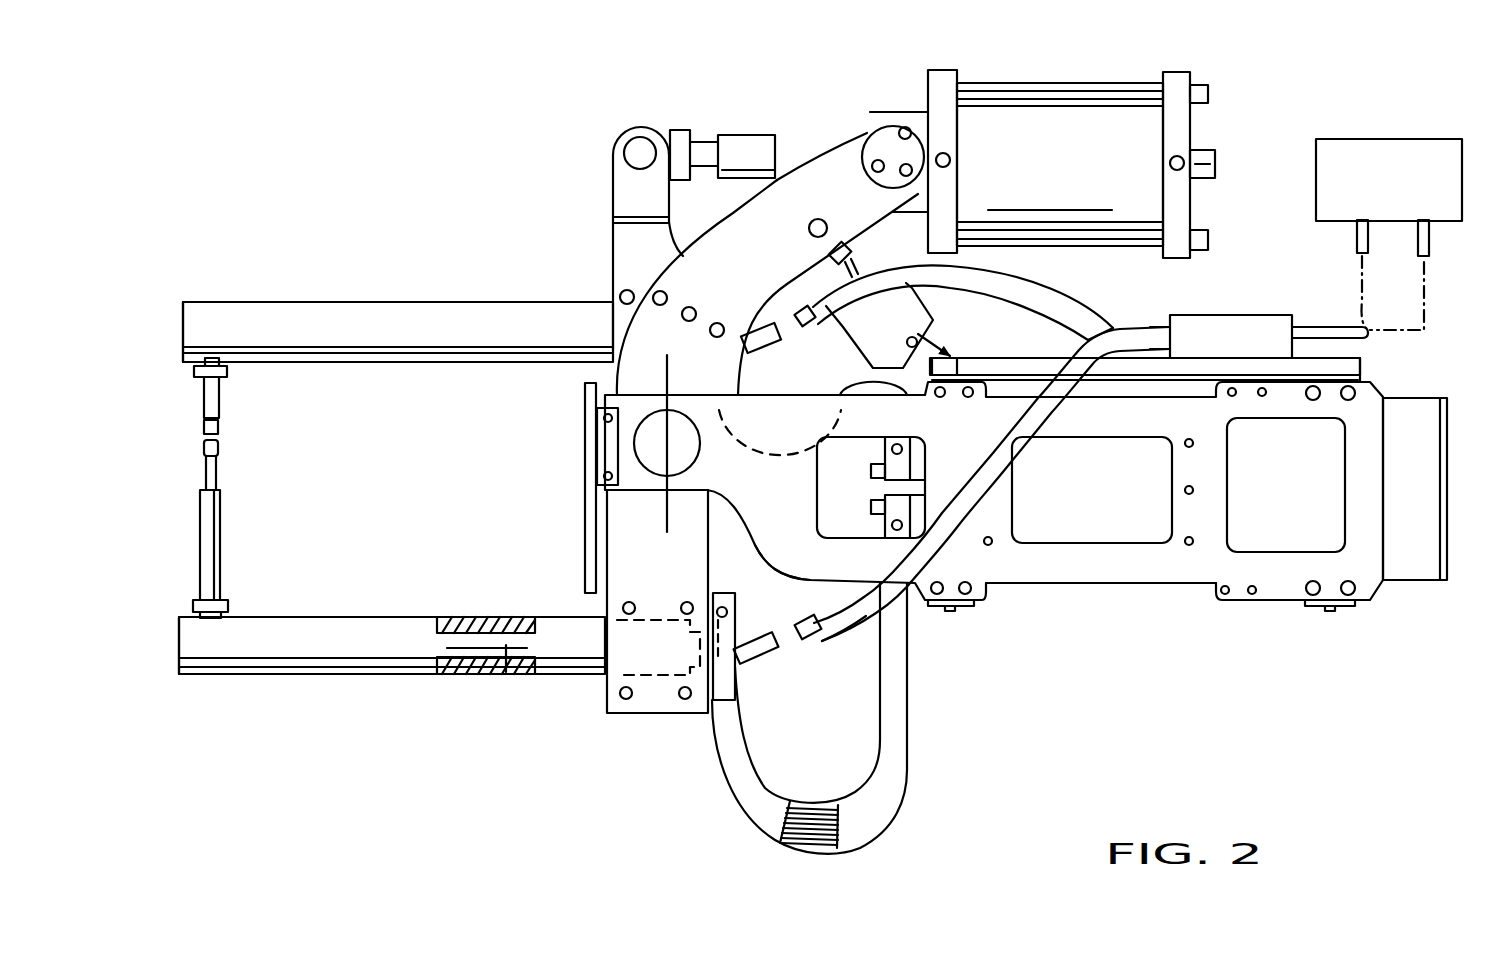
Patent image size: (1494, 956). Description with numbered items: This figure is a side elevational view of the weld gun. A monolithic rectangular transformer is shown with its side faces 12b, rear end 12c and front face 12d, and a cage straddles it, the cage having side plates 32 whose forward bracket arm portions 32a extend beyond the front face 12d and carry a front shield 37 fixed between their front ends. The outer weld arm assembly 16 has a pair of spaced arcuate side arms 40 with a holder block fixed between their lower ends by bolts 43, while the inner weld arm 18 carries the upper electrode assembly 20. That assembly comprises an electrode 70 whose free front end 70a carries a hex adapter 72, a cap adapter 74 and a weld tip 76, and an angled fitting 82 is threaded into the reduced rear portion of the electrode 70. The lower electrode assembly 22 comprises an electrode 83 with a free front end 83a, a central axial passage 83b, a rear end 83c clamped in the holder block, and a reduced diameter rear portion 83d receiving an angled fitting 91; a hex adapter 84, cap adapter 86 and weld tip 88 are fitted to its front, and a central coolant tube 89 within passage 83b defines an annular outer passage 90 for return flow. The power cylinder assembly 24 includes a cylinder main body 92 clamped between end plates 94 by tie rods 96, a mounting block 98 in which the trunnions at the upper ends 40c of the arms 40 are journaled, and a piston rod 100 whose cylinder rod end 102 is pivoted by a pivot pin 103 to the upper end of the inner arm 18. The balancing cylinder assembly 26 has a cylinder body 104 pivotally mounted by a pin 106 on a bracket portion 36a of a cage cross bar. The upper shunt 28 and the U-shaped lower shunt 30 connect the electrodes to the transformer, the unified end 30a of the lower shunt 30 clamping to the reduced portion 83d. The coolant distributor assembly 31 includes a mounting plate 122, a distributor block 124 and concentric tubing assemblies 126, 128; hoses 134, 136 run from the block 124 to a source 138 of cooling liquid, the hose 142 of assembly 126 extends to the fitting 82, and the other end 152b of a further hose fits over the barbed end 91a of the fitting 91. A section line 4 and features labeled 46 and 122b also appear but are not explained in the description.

The section line 4- 4 is at (682, 366).
The side faces 12b is at (1130, 527).
The rear end 12c is at (1452, 583).
The front face 12d is at (922, 480).
The outer weld arm assembly 16 is at (731, 211).
The inner weld arm 18 is at (612, 190).
The upper electrode assembly 20 is at (292, 268).
The lower electrode assembly 22 is at (404, 678).
The power cylinder assembly 24 is at (1262, 128).
The balancing cylinder assembly 26 is at (843, 338).
The upper shunt 28 is at (850, 396).
The lower shunt 30 is at (905, 800).
The unified end 30a is at (722, 592).
The coolant distributor assembly 31 is at (1232, 302).
The side plates 32 is at (1188, 582).
The forward bracket arm portions 32a is at (768, 572).
The bracket portion 36a is at (948, 348).
The front shield 37 is at (584, 503).
The arcuate side arms 40 is at (672, 262).
The upper ends 40c is at (864, 138).
The bolts 43 is at (618, 712).
The pivot 46 is at (680, 458).
The electrode 70 is at (378, 268).
The free front end 70a is at (214, 302).
The hex adapter 72 is at (230, 372).
The cap adapter 74 is at (222, 402).
The electrode cap or weld tip 76 is at (220, 428).
The angled fitting 82 is at (755, 348).
The electrode 83 is at (418, 592).
The free front end 83a is at (262, 677).
The central axial passage 83b is at (519, 617).
The rear end 83c is at (660, 616).
The reduced diameter rear portion 83d is at (707, 750).
The hex adapter 84 is at (230, 604).
The cap adapter 86 is at (222, 522).
The electrode cap or weld tip 88 is at (222, 466).
The central coolant tube 89 is at (505, 650).
The annular outer passage 90 is at (486, 636).
The angled fitting 91 is at (756, 660).
The barbed end 91a is at (846, 640).
The cylinder main body 92 is at (1074, 178).
The end plates 94 is at (938, 70).
The tie rods 96 is at (1085, 88).
The mounting block 98 is at (898, 112).
The piston rod 100 is at (748, 134).
The cylinder rod end 102 is at (668, 128).
The pivot pin 103 is at (630, 153).
The cylinder body 104 is at (912, 304).
The pin 106 is at (926, 340).
The mounting plate 122 is at (1217, 362).
The rail end 122b is at (1404, 362).
The distributor block 124 is at (1277, 296).
The concentric tubing assembly 126 is at (1003, 278).
The concentric tubing assembly 128 is at (1079, 376).
The hose 134 is at (1358, 243).
The hose 136 is at (1340, 325).
The source of cooling liquid 138 is at (1392, 192).
The hose 142 is at (1137, 292).
The other end of hose 152b is at (798, 640).